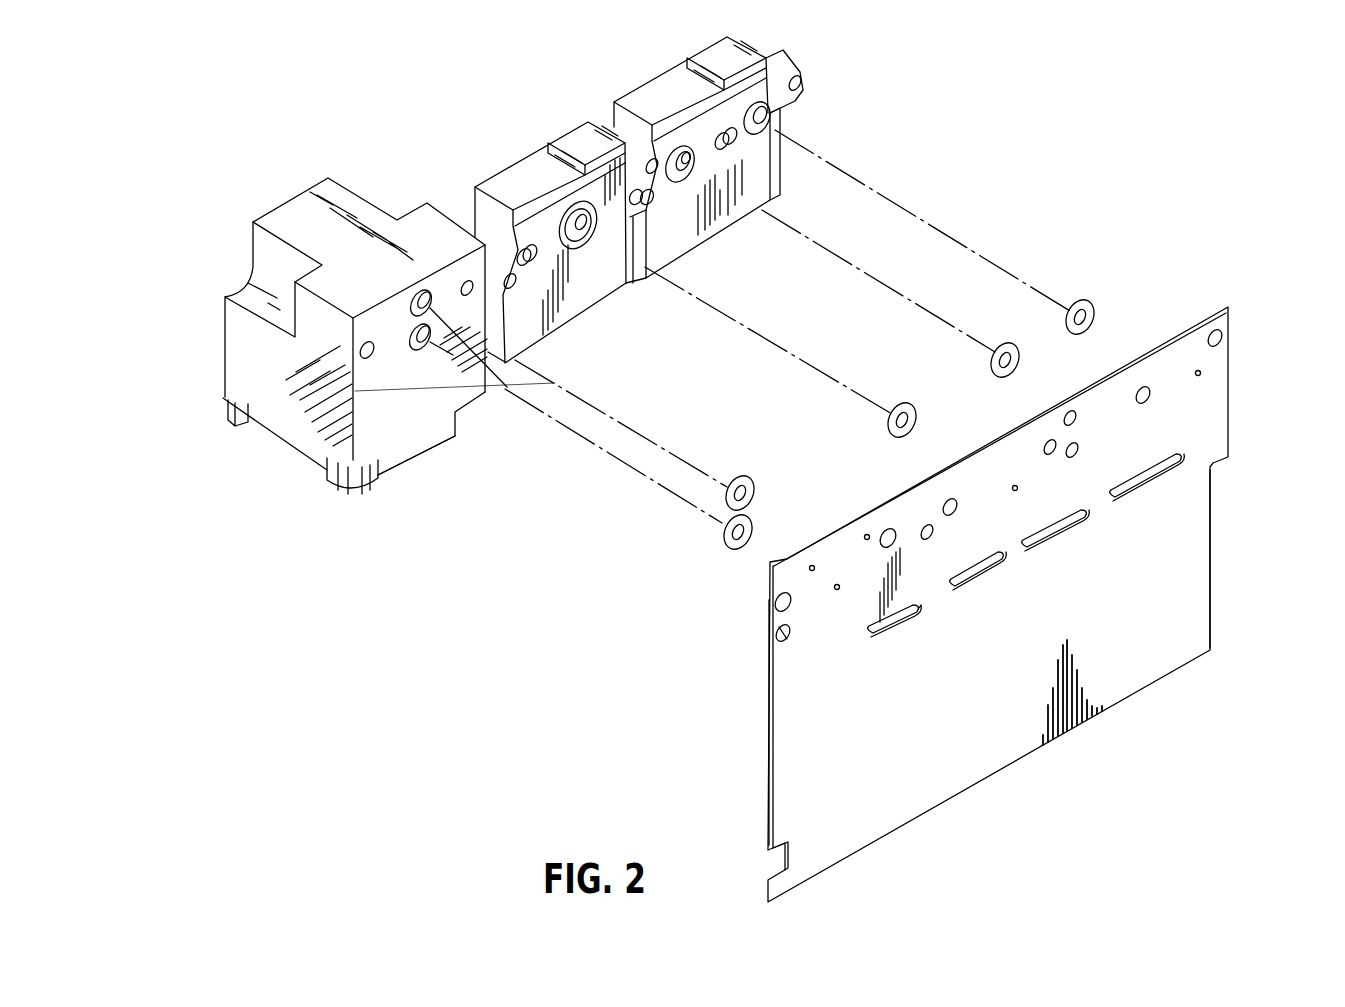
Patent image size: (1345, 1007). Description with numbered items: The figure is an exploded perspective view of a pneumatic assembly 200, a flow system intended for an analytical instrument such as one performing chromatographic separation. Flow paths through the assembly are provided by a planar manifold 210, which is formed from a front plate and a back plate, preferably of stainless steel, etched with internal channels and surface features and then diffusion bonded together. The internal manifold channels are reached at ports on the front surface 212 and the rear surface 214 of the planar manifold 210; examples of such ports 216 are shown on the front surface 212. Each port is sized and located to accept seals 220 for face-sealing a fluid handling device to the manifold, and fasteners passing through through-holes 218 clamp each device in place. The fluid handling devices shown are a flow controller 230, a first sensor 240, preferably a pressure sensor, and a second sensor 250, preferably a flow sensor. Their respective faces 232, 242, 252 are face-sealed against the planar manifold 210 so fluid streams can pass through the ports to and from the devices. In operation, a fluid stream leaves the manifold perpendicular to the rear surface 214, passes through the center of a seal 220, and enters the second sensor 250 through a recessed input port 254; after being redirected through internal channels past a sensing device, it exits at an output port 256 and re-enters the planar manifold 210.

The pneumatic assembly 200 is at (414, 623).
The planar manifold 210 is at (915, 820).
The front surface 212 is at (1187, 603).
The rear surface 214 is at (765, 790).
The ports 216 is at (867, 535).
The through-holes 218 is at (768, 612).
The seals 220 is at (1090, 300).
The flow controller 230 is at (297, 217).
The face 232 is at (418, 432).
The first sensor 240 is at (521, 183).
The face 242 is at (555, 255).
The second sensor 250 is at (655, 95).
The face 252 is at (667, 190).
The input port 254 is at (783, 107).
The output port 256 is at (700, 164).